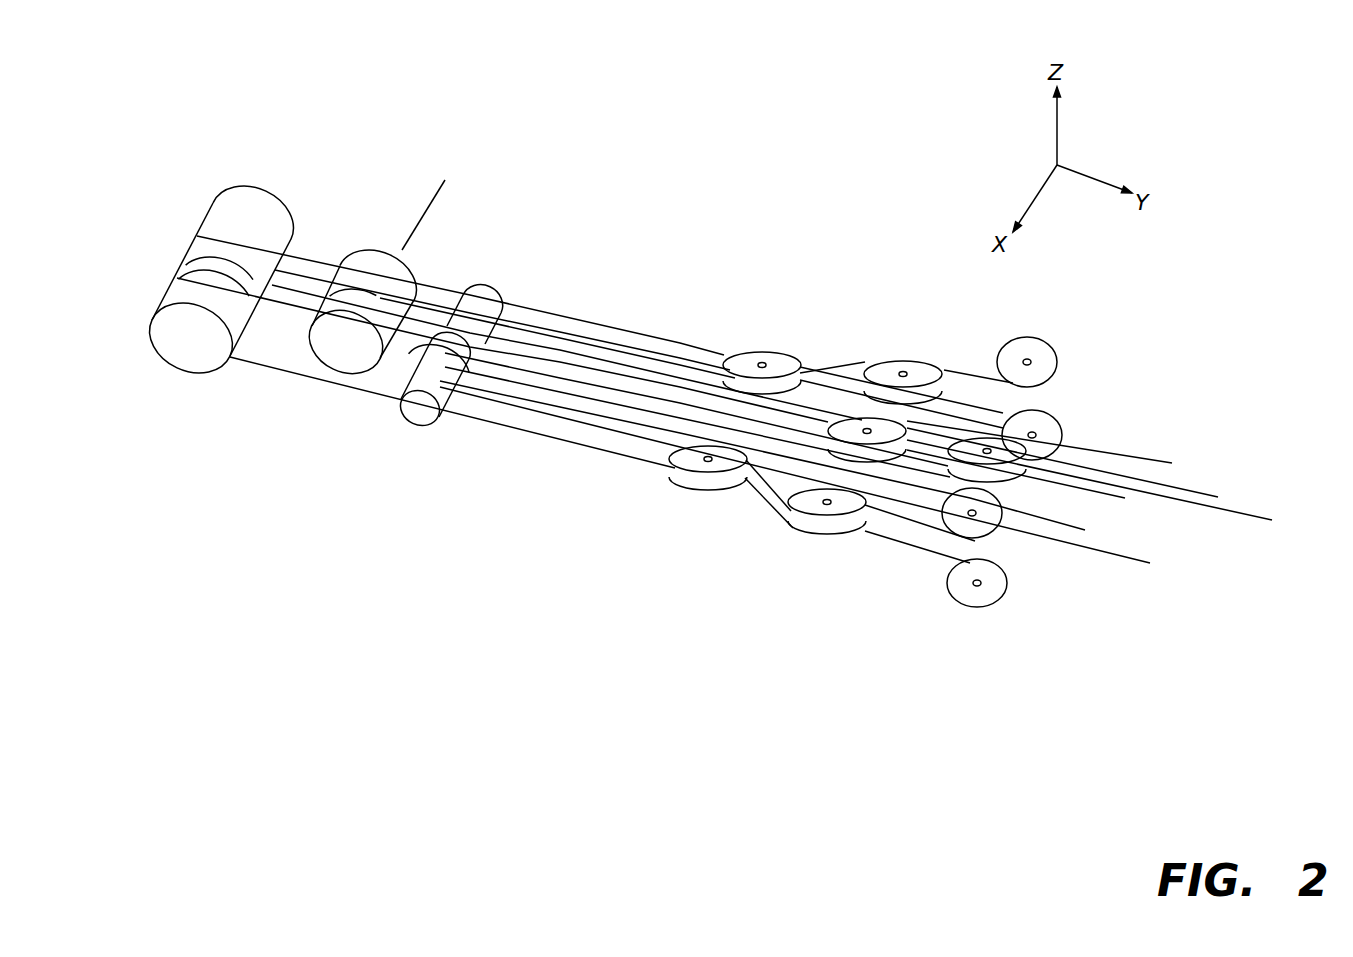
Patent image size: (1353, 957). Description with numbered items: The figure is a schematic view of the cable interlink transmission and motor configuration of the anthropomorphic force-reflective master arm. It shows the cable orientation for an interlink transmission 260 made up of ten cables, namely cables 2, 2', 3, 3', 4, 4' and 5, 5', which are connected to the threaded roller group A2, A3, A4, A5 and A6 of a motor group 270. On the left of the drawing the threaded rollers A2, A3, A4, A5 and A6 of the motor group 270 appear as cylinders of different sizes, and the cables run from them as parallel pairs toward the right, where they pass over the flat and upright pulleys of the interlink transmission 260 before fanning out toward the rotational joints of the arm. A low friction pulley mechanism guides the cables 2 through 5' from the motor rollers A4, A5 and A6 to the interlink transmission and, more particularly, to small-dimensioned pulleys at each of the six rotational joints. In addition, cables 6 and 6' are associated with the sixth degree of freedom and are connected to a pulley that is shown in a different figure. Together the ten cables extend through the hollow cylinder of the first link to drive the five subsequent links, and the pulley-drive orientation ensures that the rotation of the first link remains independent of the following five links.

The cable 2 is at (705, 309).
The cable 2' is at (1052, 485).
The cable 3 is at (990, 521).
The cable 3' is at (1018, 595).
The cable 4 is at (840, 430).
The cable 4' is at (788, 352).
The cable 5 is at (730, 292).
The cable 5' is at (735, 321).
The cable 6 is at (642, 424).
The cable 6' is at (701, 471).
The threaded roller A2 is at (497, 280).
The threaded roller A3 is at (420, 408).
The threaded roller A4 is at (350, 345).
The threaded roller A5 is at (275, 190).
The threaded roller A6 is at (190, 337).
The interlink transmission 260 is at (832, 655).
The motor group 270 is at (307, 550).